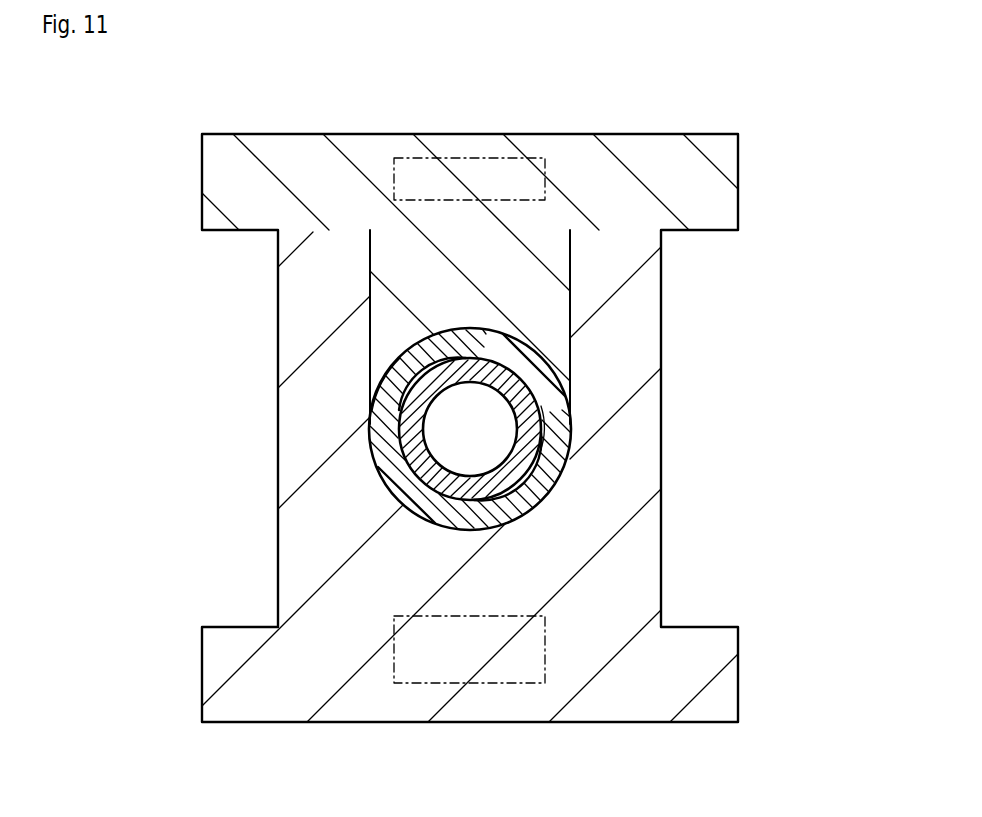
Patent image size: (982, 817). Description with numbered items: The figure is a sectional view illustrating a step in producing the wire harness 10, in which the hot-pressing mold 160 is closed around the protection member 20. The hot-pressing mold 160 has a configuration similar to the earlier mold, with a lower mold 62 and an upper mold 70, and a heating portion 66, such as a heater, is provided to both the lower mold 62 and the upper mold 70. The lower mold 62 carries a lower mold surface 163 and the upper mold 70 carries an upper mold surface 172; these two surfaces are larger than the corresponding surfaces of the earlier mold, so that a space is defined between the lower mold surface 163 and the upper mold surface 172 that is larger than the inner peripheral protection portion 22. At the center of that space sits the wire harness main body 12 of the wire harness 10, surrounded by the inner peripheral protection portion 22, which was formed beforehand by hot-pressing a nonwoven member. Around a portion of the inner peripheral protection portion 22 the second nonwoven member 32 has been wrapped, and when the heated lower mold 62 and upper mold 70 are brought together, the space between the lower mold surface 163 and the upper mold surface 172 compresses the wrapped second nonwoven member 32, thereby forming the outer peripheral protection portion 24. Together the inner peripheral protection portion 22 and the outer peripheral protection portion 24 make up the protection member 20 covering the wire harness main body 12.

The hot-pressing mold 160 is at (542, 107).
The upper mold 70 is at (738, 169).
The lower mold 62 is at (738, 673).
The heating portion 66 is at (449, 158).
The lower mold surface 163 is at (482, 514).
The protection member 20 is at (553, 362).
The upper mold surface 172 is at (456, 331).
The outer peripheral protection portion 24 is at (400, 441).
The inner peripheral protection portion 22 is at (398, 367).
The second nonwoven member 32 is at (556, 378).
The wire harness main body 12 is at (546, 424).
The wire harness 10 is at (571, 448).